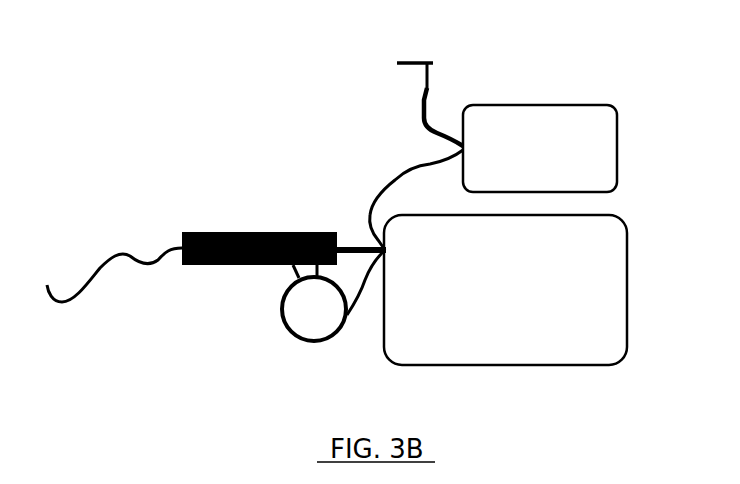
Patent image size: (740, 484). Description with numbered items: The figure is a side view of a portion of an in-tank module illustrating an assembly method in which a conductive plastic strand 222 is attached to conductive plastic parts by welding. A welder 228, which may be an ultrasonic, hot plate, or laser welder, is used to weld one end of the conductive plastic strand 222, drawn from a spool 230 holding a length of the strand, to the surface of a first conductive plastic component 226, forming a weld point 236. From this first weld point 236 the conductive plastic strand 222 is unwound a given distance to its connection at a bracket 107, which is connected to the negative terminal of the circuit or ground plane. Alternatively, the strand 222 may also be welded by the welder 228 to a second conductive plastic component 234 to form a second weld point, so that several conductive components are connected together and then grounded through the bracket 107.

The bracket 107 is at (429, 83).
The conductive plastic strand 222 is at (422, 102).
The second conductive plastic component 234 is at (563, 168).
The first conductive plastic component 226 is at (553, 318).
The weld point 236 is at (386, 250).
The welder 228 is at (252, 231).
The spool 230 is at (321, 344).